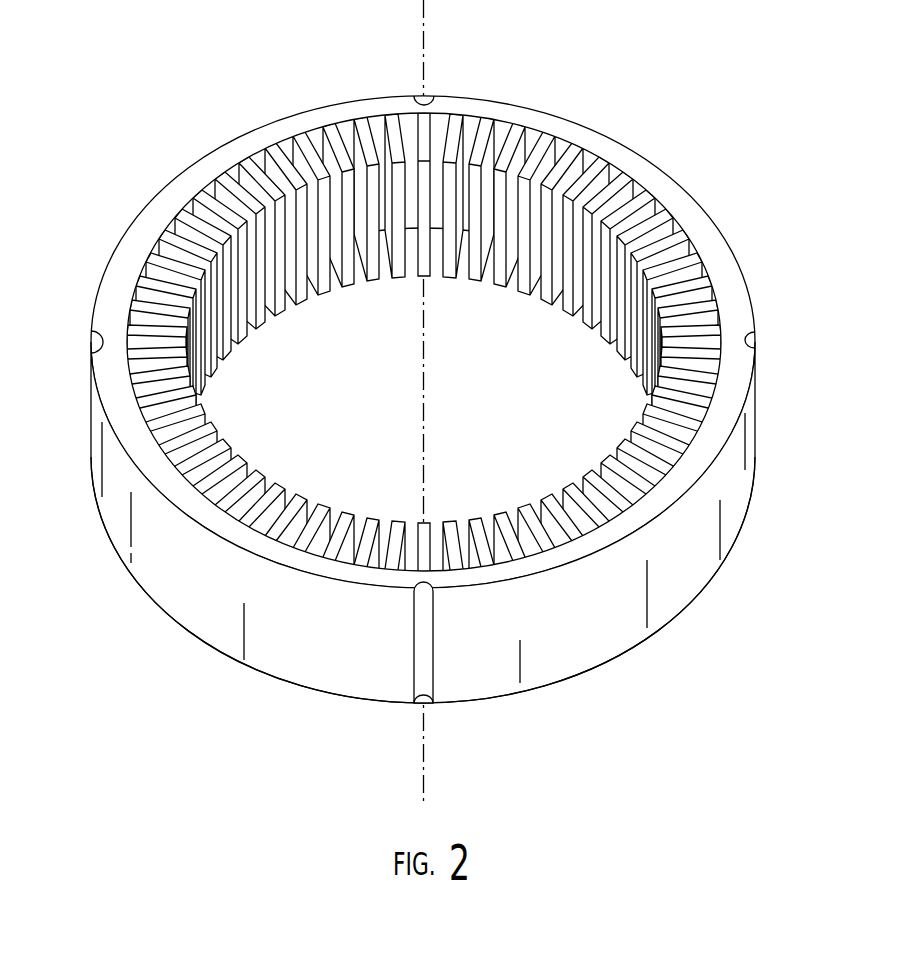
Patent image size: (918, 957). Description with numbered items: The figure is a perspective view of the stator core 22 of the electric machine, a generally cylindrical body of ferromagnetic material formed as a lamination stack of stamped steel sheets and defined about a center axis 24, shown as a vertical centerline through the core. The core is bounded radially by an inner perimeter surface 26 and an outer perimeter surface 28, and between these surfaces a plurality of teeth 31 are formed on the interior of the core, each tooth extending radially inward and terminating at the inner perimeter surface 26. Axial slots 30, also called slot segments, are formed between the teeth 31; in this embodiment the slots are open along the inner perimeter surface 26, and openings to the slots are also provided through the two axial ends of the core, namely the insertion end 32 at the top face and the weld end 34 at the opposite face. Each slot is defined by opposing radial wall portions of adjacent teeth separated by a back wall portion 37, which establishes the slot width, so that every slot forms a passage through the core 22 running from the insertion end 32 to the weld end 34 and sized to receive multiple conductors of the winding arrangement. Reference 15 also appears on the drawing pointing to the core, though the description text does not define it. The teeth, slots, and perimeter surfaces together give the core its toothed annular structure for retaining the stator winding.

The stator core 15 is at (411, 380).
The stator core 22 is at (411, 375).
The center axis 24 is at (427, 750).
The inner perimeter surface 26 is at (378, 258).
The outer perimeter surface 28 is at (297, 660).
The axial slots 30 is at (148, 256).
The teeth 31 is at (303, 163).
The insertion end 32 is at (160, 490).
The weld end 34 is at (684, 611).
The back wall portion 37 is at (152, 421).